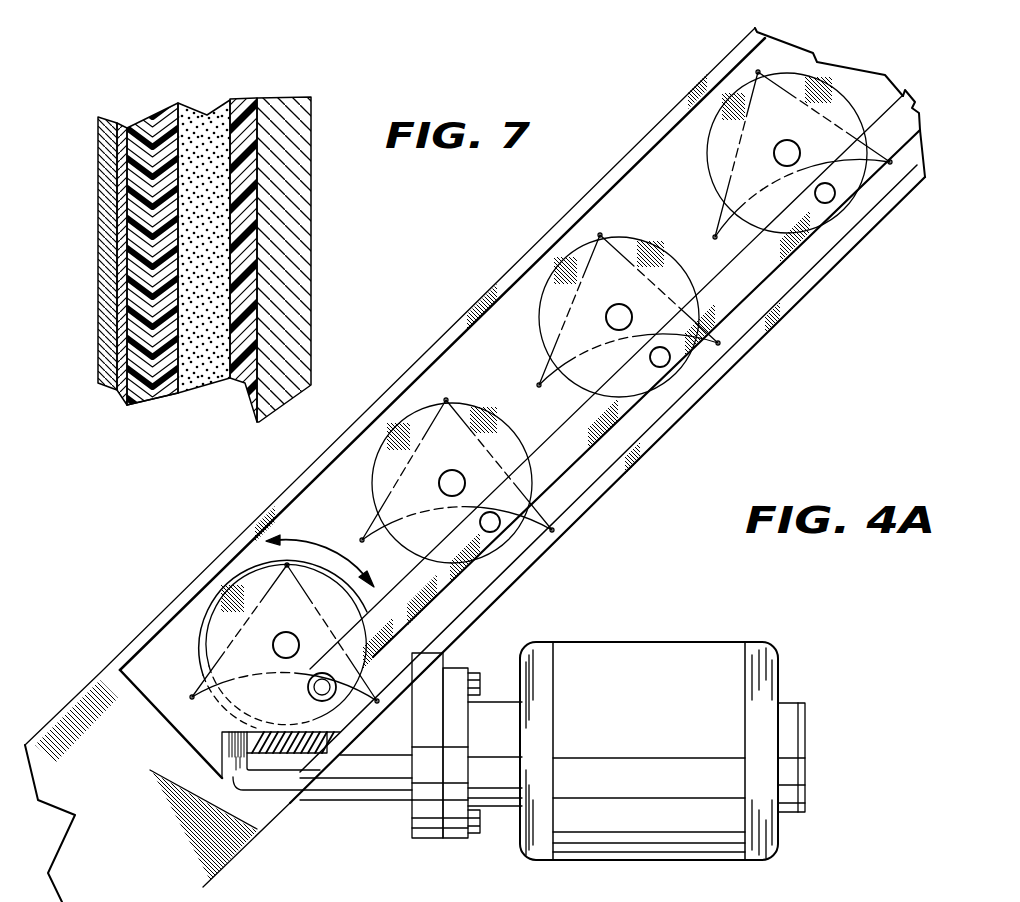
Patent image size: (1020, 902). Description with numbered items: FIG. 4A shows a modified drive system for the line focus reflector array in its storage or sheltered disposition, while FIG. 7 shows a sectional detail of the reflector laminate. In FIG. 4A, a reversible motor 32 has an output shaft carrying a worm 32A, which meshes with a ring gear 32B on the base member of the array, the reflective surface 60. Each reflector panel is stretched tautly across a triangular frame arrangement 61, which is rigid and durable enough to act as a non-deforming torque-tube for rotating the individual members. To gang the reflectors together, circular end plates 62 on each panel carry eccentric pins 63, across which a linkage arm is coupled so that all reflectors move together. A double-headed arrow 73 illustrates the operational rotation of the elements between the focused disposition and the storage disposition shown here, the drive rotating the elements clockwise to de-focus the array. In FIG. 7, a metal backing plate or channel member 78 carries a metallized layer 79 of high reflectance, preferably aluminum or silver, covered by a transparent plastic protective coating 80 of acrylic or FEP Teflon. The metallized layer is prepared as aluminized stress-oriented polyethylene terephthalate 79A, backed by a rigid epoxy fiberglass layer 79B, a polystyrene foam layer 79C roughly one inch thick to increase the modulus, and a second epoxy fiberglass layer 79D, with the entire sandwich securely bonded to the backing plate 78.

In FIG. 4A, the motor 32 is at (645, 645).
In FIG. 4A, the worm 32A is at (287, 740).
In FIG. 4A, the ring gear 32B is at (202, 618).
In FIG. 4A, the reflective surface 60 is at (172, 725).
In FIG. 4A, the triangular frame arrangement 61 is at (730, 153).
In FIG. 4A, the circular end plates 62 is at (837, 203).
In FIG. 4A, the eccentric pins 63 is at (835, 197).
In FIG. 4A, the double-headed arrow 73 is at (323, 546).
In FIG. 7, the backing plate 78 is at (311, 240).
In FIG. 7, the metallized layer 79 is at (119, 127).
In FIG. 7, the aluminized stress-oriented polyethylene terephthalate 79A is at (140, 125).
In FIG. 7, the epoxy fiberglass layer 79B is at (158, 395).
In FIG. 7, the polystyrene foam layer 79C is at (203, 128).
In FIG. 7, the second epoxy fiberglass layer 79D is at (243, 105).
In FIG. 7, the transparent plastic protective coating 80 is at (98, 157).